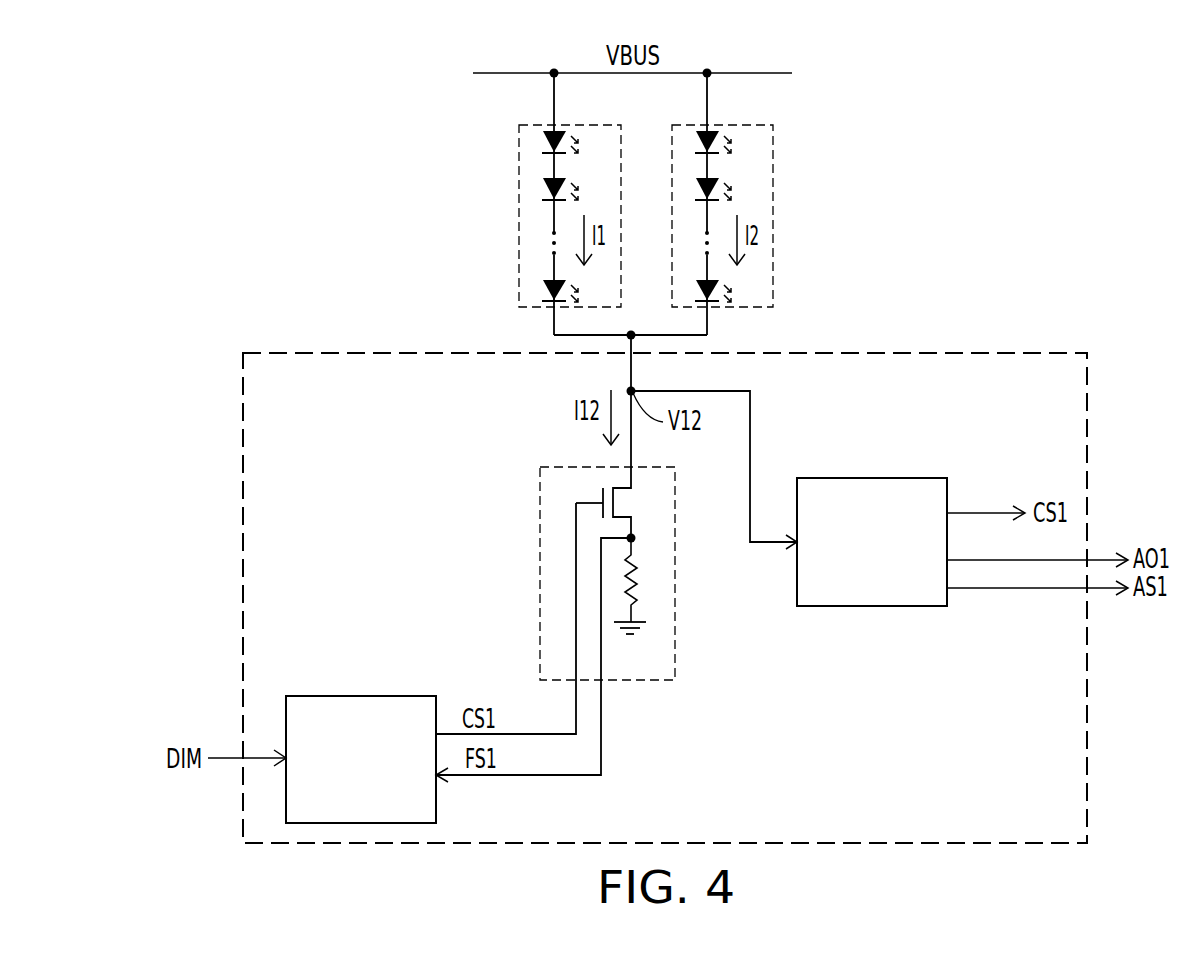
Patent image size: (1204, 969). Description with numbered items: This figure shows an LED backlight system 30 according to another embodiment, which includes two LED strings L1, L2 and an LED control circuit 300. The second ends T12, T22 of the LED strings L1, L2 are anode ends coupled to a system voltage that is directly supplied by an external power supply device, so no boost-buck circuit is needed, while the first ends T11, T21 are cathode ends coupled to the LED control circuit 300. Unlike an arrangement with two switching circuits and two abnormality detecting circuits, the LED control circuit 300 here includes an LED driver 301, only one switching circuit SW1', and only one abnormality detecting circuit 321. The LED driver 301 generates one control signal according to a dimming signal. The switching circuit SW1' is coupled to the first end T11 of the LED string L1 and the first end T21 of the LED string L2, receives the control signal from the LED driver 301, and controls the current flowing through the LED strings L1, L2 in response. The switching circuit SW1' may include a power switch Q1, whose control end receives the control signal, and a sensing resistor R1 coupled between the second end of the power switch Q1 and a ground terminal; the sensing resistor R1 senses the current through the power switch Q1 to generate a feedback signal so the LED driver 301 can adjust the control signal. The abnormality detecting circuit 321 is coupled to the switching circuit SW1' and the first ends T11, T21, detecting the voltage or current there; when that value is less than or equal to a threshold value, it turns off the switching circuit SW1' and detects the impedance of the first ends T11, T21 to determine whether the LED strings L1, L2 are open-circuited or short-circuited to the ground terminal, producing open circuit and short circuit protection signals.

The LED backlight system 30 is at (1163, 846).
The LED control circuit 300 is at (915, 352).
The LED driver 301 is at (365, 696).
The abnormality detecting circuit 321 is at (915, 478).
The LED string L1 is at (519, 202).
The LED string L2 is at (773, 202).
The first end T11 is at (554, 307).
The second end T12 is at (554, 126).
The first end T21 is at (707, 307).
The second end T22 is at (707, 126).
The switching circuit SW1' is at (577, 573).
The power switch Q1 is at (622, 502).
The sensing resistor R1 is at (645, 580).